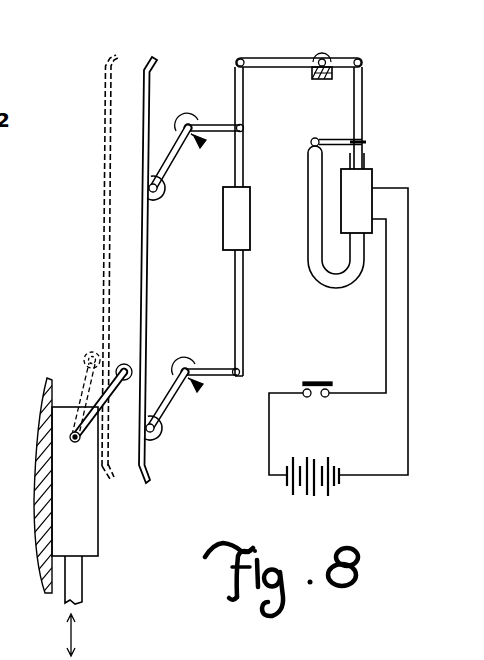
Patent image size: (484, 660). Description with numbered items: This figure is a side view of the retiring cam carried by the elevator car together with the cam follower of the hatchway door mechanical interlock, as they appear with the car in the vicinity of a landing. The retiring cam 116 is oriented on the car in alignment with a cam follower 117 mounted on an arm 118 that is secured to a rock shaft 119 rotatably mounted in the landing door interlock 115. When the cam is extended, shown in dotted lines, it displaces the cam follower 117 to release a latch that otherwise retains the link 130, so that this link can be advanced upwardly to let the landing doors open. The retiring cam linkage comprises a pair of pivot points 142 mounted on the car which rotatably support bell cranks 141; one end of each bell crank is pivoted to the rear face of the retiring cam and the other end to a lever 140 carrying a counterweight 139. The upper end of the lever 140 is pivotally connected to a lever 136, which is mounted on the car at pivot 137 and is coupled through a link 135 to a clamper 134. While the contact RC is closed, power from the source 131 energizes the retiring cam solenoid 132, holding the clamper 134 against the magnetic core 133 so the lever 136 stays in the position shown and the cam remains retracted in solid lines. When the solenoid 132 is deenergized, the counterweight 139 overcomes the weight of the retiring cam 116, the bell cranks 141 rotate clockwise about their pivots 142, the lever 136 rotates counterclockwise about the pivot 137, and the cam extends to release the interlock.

The landing door interlock 115 is at (98, 552).
The retiring cam 116 is at (147, 238).
The cam follower 117 is at (126, 364).
The arm 118 is at (100, 422).
The rock shaft 119 is at (75, 442).
The link 130 is at (82, 592).
The source 131 is at (322, 496).
The retiring cam solenoid 132 is at (368, 172).
The magnetic core 133 is at (308, 190).
The clamper 134 is at (348, 138).
The link 135 is at (364, 62).
The lever 136 is at (256, 58).
The pivot 137 is at (317, 55).
The counterweight 139 is at (250, 220).
The lever 140 is at (243, 303).
The bell cranks 141 is at (170, 170).
The pivot points 142 is at (182, 120).